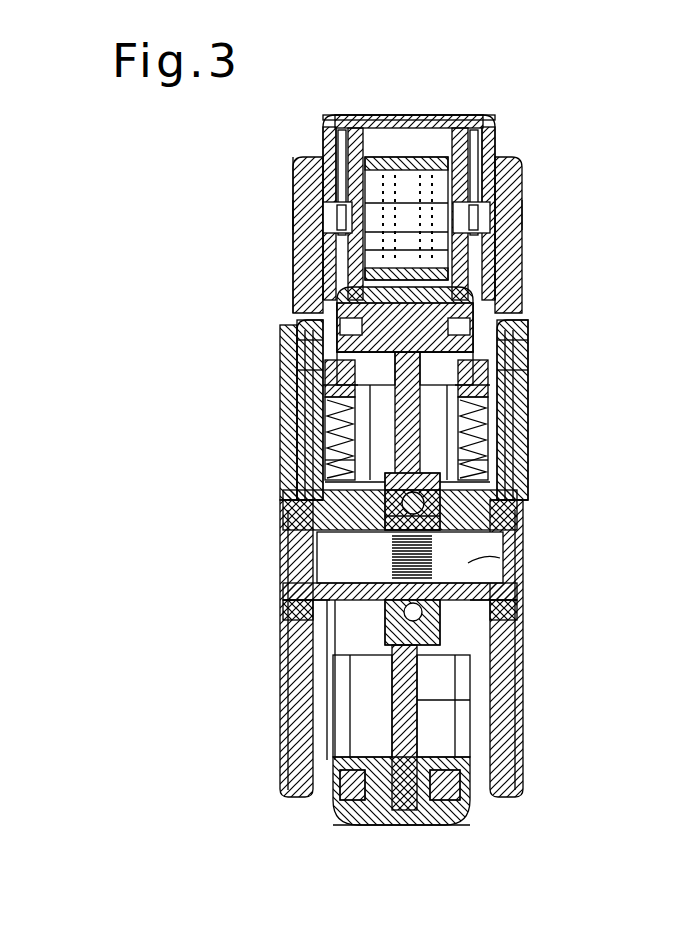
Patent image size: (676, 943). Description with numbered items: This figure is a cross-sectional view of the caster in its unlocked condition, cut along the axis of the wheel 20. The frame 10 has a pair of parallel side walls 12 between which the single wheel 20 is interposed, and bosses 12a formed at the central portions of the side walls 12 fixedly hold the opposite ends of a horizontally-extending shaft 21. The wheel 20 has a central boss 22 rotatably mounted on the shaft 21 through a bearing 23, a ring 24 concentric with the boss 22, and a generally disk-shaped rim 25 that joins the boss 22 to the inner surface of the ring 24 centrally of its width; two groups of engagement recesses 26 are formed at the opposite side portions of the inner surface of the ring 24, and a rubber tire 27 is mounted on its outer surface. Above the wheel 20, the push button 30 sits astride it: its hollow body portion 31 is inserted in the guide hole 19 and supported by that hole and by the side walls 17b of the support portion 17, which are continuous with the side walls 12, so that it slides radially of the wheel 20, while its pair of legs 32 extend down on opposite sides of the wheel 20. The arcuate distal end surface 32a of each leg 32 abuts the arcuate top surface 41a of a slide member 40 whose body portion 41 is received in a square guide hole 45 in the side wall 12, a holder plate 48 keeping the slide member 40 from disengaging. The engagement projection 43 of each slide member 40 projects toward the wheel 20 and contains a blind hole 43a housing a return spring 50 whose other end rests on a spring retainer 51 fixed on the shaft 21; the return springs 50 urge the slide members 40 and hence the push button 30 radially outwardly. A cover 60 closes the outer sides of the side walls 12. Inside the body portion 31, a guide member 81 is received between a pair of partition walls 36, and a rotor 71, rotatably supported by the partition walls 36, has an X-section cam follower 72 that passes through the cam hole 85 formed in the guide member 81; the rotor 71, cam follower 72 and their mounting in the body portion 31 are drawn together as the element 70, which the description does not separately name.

The frame 10 is at (523, 152).
The side walls 12 is at (300, 638).
The bosses 12a is at (318, 520).
The support portion 17 is at (527, 172).
The side walls of the support portion 17b is at (294, 213).
The guide hole 19 is at (340, 155).
The wheel 20 is at (342, 826).
The shaft 21 is at (505, 563).
The boss 22 is at (425, 655).
The bearing 23 is at (422, 614).
The ring 24 is at (500, 796).
The rim 25 is at (440, 705).
The engagement recesses 26 is at (330, 395).
The rubber tire 27 is at (470, 818).
The push button 30 is at (468, 114).
The hollow body portion 31 is at (438, 118).
The legs 32 is at (296, 328).
The distal end surface 32a is at (300, 372).
The partition walls 36 is at (328, 134).
The slide member 40 is at (300, 478).
The body portion 41 is at (312, 415).
The top surface 41a is at (300, 348).
The engagement projection 43 is at (335, 425).
The blind hole 43a is at (312, 460).
The guide hole 45 is at (300, 505).
The holder plate 48 is at (325, 385).
The return spring 50 is at (320, 495).
The spring retainer 51 is at (292, 598).
The cover 60 is at (286, 572).
The rotor 70 is at (396, 157).
The rotor 71 is at (372, 203).
The cam follower 72 is at (407, 232).
The guide member 81 is at (382, 152).
The cam hole 85 is at (472, 292).